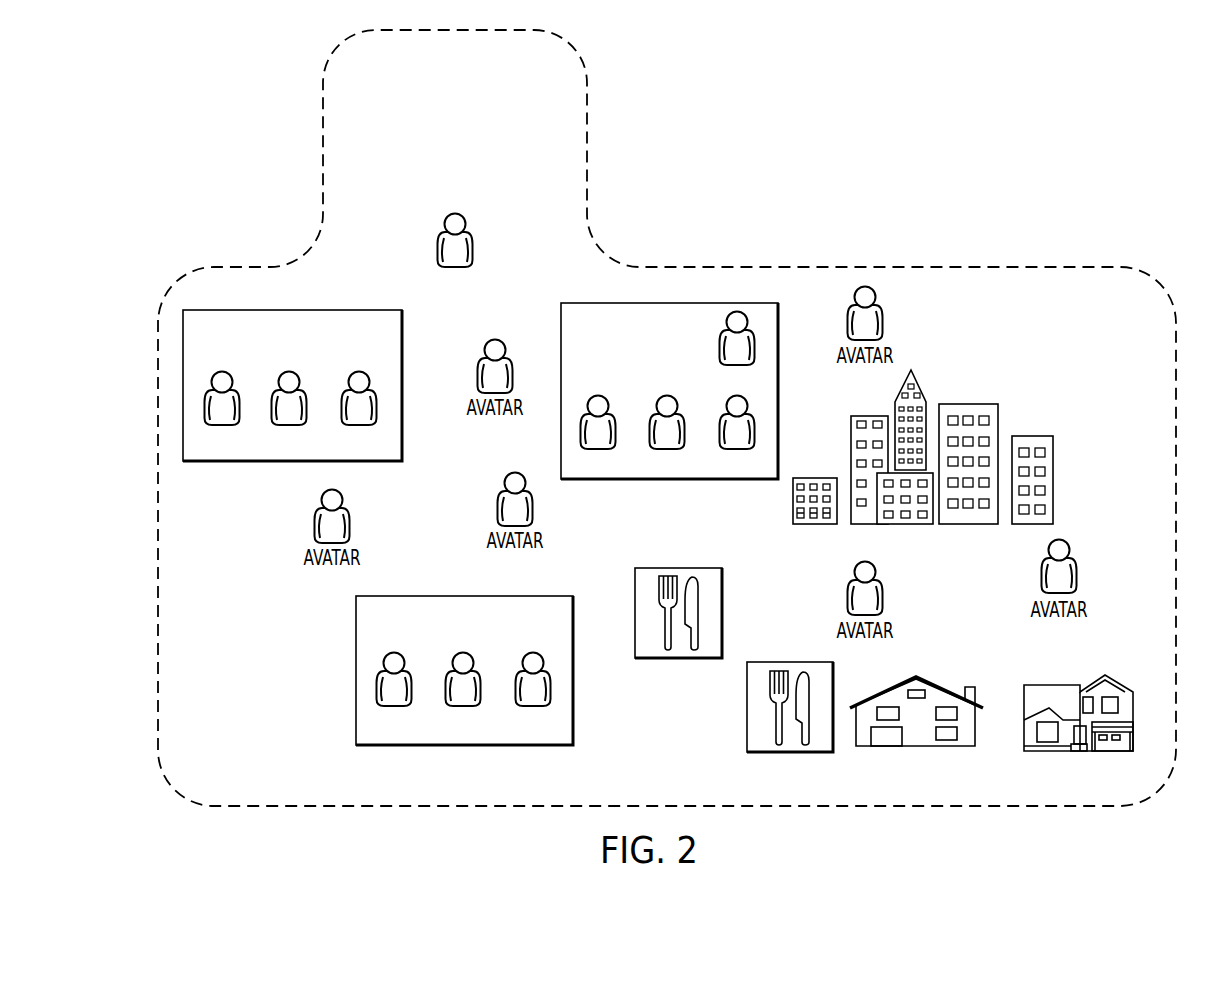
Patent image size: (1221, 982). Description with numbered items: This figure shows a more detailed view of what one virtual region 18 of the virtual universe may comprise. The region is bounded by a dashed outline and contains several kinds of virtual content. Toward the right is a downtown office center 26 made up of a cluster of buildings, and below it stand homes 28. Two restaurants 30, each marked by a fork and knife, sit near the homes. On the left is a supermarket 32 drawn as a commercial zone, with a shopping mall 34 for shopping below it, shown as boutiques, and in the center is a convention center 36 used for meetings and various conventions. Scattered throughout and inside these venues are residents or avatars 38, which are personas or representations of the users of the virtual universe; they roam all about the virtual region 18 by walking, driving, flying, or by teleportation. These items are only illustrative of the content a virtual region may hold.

The virtual region 18 is at (587, 127).
The downtown office center 26 is at (975, 404).
The homes 28 is at (937, 688).
The restaurants 30 is at (722, 614).
The supermarket 32 is at (331, 310).
The shopping mall 34 is at (356, 672).
The convention center 36 is at (667, 480).
The avatars 38 is at (455, 213).